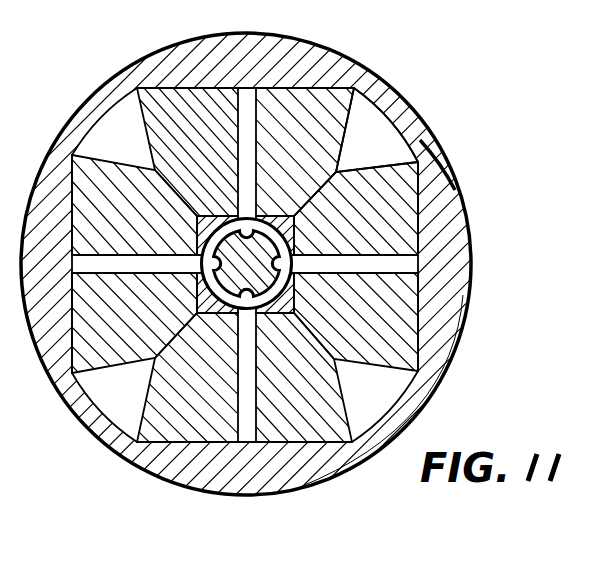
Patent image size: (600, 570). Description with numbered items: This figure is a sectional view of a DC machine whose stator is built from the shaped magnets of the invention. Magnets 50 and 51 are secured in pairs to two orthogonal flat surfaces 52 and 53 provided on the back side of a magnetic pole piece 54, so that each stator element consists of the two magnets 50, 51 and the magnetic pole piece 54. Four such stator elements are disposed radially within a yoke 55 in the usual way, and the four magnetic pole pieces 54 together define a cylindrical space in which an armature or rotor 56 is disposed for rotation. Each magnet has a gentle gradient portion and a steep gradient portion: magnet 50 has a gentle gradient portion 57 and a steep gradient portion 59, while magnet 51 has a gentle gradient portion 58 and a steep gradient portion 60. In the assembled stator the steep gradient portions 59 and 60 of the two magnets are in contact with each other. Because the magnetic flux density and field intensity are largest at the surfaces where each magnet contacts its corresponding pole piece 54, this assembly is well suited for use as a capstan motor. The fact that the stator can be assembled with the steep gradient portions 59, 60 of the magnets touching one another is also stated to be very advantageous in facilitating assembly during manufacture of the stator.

The magnet 50 is at (337, 65).
The magnet 51 is at (408, 188).
The flat surface 52 is at (288, 226).
The flat surface 53 is at (297, 241).
The magnetic pole piece 54 is at (297, 221).
The yoke 55 is at (223, 46).
The armature or rotor 56 is at (258, 274).
The gentle gradient portion 57 is at (372, 85).
The gentle gradient portion 58 is at (424, 141).
The steep gradient portion 59 is at (346, 180).
The steep gradient portion 60 is at (338, 176).